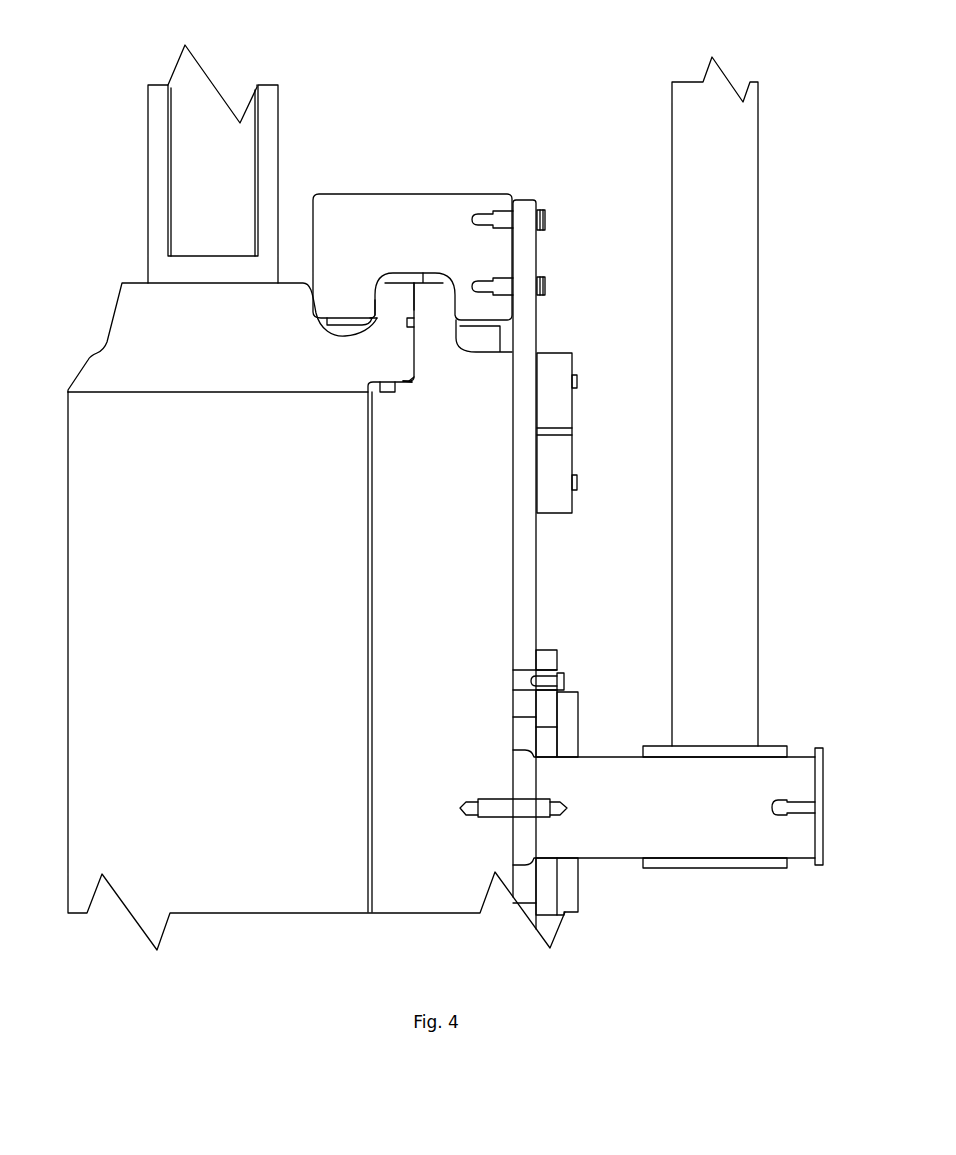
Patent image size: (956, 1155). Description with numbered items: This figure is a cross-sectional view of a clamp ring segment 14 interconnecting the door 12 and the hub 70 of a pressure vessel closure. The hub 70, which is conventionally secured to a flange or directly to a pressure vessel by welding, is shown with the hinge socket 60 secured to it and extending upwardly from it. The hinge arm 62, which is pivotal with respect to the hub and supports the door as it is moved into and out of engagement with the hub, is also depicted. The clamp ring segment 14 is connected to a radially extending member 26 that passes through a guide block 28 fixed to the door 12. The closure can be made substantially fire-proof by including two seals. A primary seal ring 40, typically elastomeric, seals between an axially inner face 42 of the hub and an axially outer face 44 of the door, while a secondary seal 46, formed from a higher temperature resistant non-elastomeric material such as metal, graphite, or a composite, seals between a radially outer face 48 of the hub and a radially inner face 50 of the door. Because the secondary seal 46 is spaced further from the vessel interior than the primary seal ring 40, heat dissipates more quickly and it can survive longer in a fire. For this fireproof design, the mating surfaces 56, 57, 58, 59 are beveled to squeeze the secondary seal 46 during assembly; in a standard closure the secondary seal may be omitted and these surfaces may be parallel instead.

The door 12 is at (443, 686).
The clamp ring segment 14 is at (450, 194).
The radially extending member 26 is at (522, 577).
The guide block 28 is at (557, 458).
The primary seal ring 40 is at (387, 392).
The axially inner face of the hub 42 is at (405, 380).
The axially outer face of the door 44 is at (402, 377).
The secondary seal 46 is at (407, 318).
The radially outer face of the hub 48 is at (413, 305).
The radially inner face of the door 50 is at (414, 355).
The mating surface 56 is at (456, 313).
The mating surface 57 is at (456, 313).
The mating surface 58 is at (376, 306).
The mating surface 59 is at (376, 315).
The hinge socket 60 is at (267, 178).
The hinge arm 62 is at (730, 357).
The hub 70 is at (140, 332).